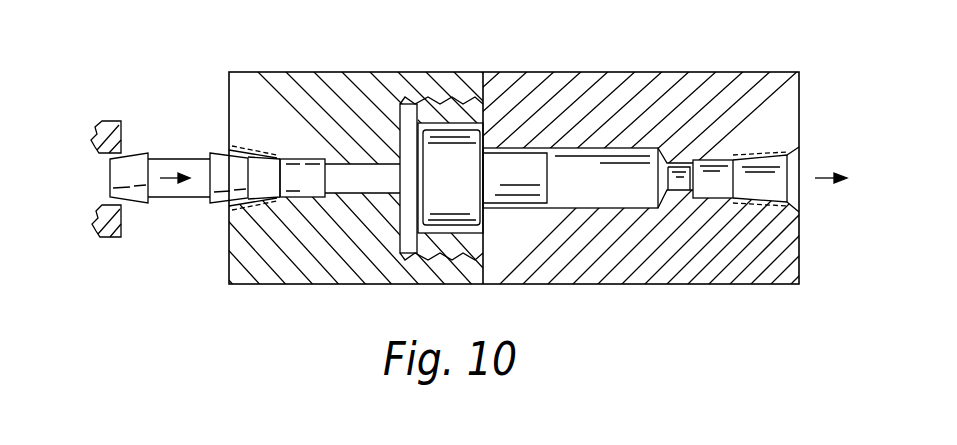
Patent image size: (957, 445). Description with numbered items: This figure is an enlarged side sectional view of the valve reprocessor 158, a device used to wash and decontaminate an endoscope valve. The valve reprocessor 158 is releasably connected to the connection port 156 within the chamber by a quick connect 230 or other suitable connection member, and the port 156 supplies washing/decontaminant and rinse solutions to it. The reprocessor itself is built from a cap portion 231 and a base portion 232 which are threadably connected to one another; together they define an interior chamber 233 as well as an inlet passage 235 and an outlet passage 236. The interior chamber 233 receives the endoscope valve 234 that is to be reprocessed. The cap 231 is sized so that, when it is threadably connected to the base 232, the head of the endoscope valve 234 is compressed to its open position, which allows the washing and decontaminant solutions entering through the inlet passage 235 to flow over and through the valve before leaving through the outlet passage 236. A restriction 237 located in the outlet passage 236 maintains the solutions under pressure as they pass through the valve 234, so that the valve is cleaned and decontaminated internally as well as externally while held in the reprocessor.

The port 156 is at (107, 237).
The valve reprocessor 158 is at (383, 76).
The quick connect 230 is at (188, 198).
The cap portion 231 is at (360, 278).
The base portion 232 is at (737, 284).
The interior chamber 233 is at (583, 195).
The endoscope valve 234 is at (443, 180).
The inlet passage 235 is at (363, 177).
The outlet passage 236 is at (718, 170).
The restriction 237 is at (680, 176).